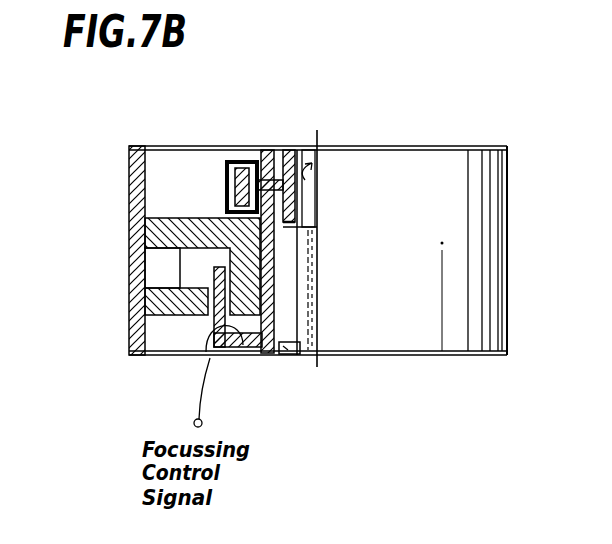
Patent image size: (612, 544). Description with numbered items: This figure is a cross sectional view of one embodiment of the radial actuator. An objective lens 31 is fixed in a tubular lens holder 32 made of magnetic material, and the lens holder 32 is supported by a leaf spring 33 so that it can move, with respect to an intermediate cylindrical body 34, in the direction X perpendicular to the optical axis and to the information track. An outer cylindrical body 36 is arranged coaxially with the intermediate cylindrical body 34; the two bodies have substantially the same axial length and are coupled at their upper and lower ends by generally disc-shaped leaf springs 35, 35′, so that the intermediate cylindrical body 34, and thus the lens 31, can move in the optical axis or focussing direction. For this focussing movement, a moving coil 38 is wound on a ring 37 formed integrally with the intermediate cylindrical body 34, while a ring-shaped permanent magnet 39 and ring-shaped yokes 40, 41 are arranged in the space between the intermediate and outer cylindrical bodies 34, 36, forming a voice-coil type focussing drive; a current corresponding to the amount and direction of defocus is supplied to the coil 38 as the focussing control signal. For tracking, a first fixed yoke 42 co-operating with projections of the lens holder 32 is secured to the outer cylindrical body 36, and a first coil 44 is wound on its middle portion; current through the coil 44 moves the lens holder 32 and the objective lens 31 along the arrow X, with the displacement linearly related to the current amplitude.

The objective lens 31 is at (305, 163).
The tubular lens holder 32 is at (288, 155).
The leaf spring 33 is at (313, 290).
The intermediate cylindrical body 34 is at (280, 308).
The disc-shaped leaf spring 35 is at (170, 147).
The disc-shaped leaf spring 35′ is at (158, 356).
The outer cylindrical body 36 is at (129, 230).
The ring 37 is at (243, 345).
The moving coil 38 is at (212, 356).
The ring-shaped permanent magnet 39 is at (153, 232).
The ring-shaped yoke 40 is at (128, 158).
The ring-shaped yoke 41 is at (157, 303).
The first fixed yoke 42 is at (227, 189).
The first coil 44 is at (226, 172).